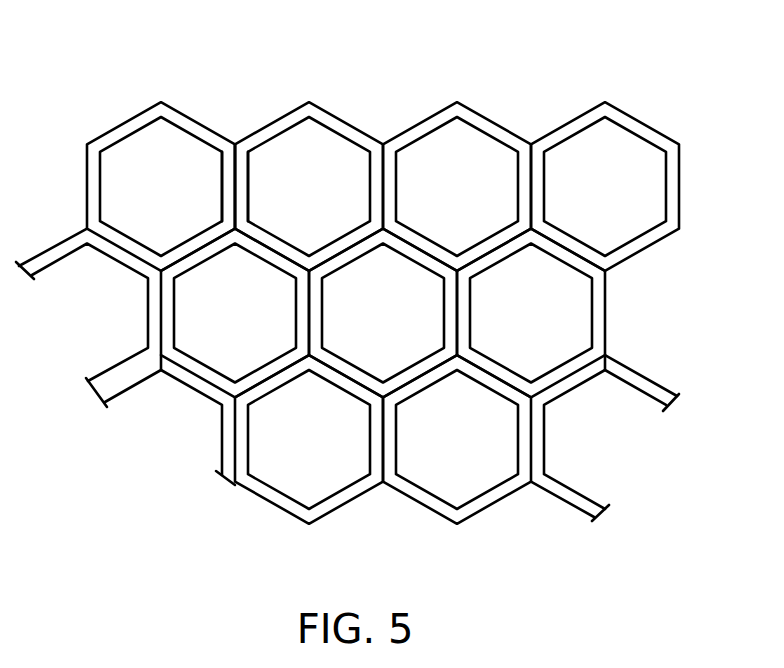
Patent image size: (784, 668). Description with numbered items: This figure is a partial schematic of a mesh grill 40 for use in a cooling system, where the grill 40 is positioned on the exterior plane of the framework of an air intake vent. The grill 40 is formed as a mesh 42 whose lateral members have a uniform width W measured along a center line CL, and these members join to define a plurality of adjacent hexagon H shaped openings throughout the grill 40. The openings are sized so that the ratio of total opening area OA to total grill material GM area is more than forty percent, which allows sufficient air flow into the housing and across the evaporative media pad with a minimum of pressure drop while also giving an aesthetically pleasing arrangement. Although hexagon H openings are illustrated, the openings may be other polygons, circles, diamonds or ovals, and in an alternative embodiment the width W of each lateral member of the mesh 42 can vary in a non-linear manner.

The grill 40 is at (547, 85).
The mesh 42 is at (469, 106).
The hexagon H is at (427, 133).
The opening area OA is at (667, 192).
The grill material GM is at (117, 255).
The center line CL is at (236, 192).
The width W is at (173, 93).